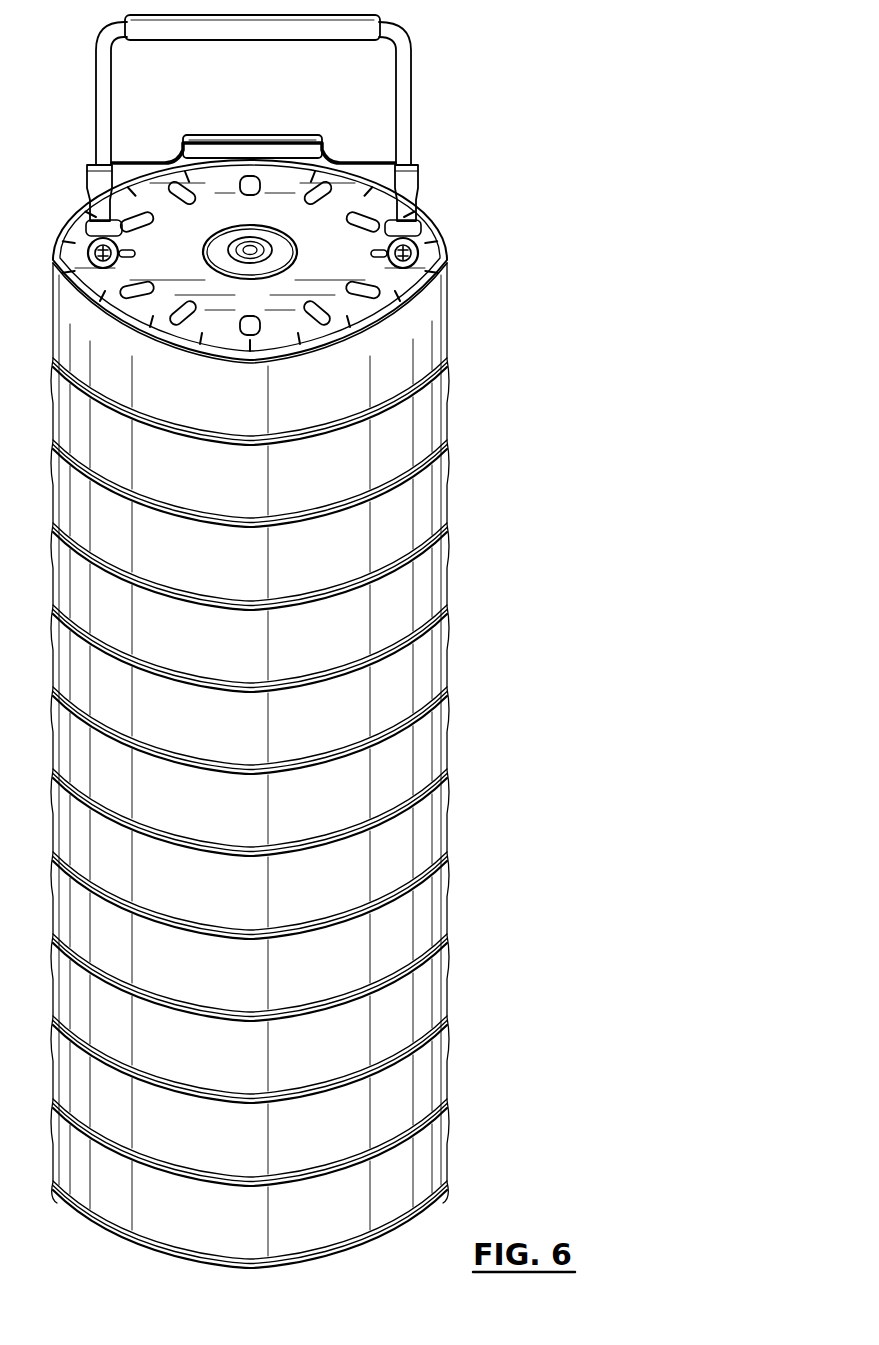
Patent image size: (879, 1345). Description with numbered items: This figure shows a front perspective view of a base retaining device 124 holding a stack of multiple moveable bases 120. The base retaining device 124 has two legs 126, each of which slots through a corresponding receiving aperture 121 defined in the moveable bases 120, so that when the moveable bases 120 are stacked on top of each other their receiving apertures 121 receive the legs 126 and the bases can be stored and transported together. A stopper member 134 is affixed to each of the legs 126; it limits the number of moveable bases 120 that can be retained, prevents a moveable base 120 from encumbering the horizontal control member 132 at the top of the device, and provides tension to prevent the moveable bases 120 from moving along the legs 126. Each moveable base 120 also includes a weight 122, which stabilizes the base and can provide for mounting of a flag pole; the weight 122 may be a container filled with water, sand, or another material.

The moveable base 120 is at (440, 733).
The receiving aperture 121 is at (317, 313).
The weight 122 is at (270, 240).
The base retaining device 124 is at (444, 178).
The leg 126 is at (403, 70).
The horizontal control member 132 is at (315, 145).
The stopper member 134 is at (418, 258).